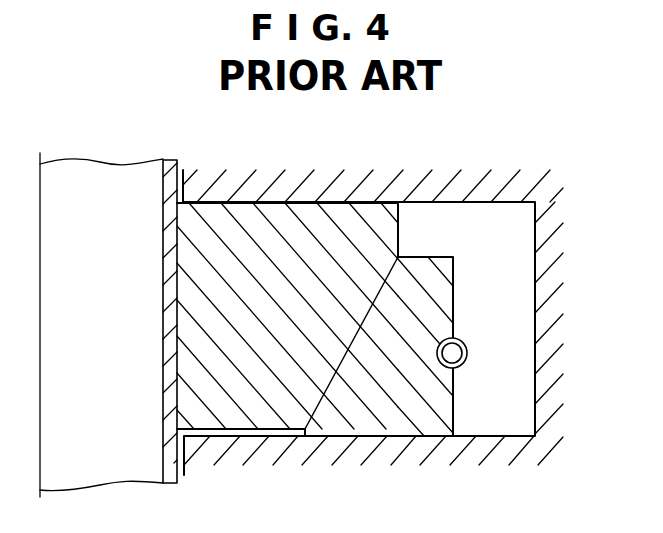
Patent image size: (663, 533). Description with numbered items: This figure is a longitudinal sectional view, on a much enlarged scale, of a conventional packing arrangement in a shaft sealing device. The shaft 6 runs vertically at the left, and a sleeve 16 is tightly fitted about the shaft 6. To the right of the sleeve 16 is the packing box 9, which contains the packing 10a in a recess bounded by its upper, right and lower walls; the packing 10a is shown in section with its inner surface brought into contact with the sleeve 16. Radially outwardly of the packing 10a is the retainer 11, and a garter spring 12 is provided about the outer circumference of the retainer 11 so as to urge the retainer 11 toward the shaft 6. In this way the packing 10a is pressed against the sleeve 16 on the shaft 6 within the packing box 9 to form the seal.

The shaft 6 is at (106, 185).
The sleeve 16 is at (172, 173).
The packing box 9 is at (543, 287).
The packing 10a is at (373, 243).
The retainer 11 is at (444, 409).
The garter spring 12 is at (463, 346).